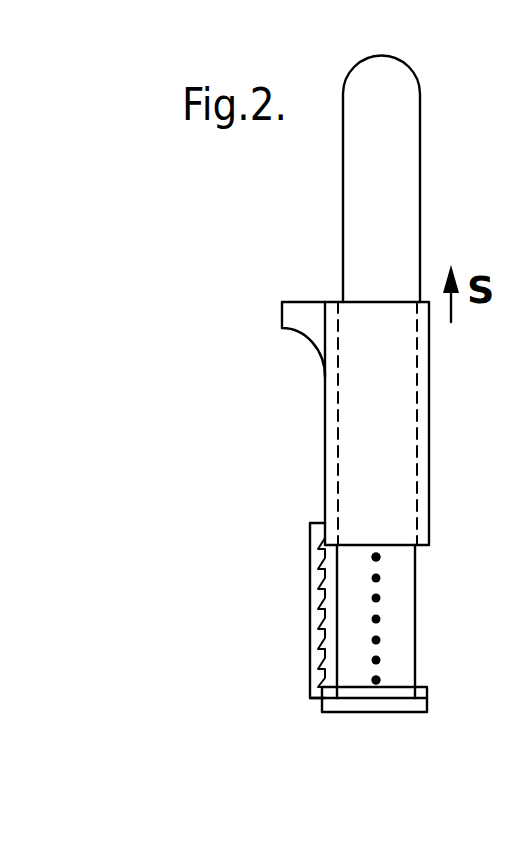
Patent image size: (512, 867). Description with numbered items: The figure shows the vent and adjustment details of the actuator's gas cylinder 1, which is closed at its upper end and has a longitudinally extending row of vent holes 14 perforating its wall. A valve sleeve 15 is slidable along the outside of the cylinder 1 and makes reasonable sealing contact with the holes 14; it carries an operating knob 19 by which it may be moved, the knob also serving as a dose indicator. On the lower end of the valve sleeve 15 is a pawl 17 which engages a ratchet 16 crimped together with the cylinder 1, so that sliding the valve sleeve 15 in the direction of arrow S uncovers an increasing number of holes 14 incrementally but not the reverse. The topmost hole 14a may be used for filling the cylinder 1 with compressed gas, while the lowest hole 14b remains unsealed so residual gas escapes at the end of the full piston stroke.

The gas cylinder 1 is at (410, 99).
The valve sleeve 15 is at (430, 387).
The operating knob 19 is at (292, 318).
The pawl 17 is at (326, 533).
The vent holes 14 is at (381, 621).
The topmost hole 14a is at (380, 558).
The lowest hole 14b is at (381, 680).
The ratchet 16 is at (312, 689).